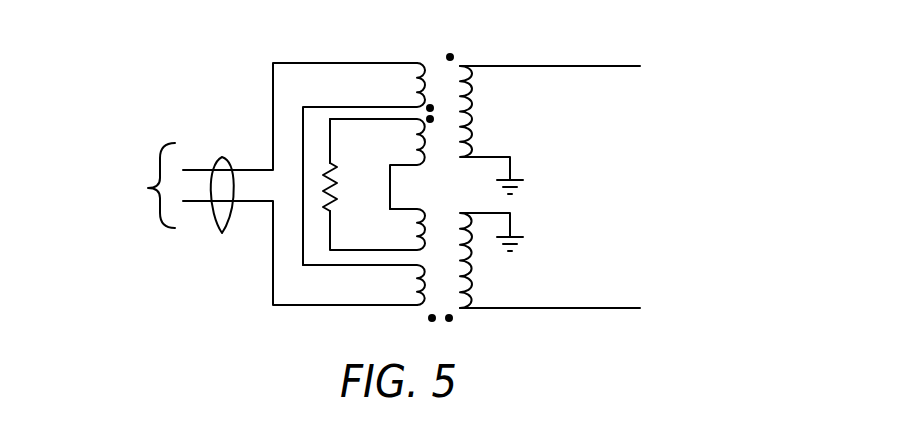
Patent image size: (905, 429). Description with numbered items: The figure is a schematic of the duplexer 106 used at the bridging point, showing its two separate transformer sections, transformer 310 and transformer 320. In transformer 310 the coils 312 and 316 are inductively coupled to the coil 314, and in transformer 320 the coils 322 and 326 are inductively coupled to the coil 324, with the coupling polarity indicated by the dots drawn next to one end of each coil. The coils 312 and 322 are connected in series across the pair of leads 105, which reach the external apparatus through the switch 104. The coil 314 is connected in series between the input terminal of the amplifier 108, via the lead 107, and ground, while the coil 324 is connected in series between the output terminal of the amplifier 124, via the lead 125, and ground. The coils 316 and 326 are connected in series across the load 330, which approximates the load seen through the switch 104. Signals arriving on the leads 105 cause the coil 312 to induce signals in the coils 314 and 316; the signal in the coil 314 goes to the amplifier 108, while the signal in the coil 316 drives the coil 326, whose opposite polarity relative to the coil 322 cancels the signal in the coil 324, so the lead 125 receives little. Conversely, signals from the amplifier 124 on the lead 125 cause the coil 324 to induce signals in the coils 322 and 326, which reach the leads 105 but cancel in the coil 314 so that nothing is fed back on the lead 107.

The switch 104 is at (121, 185).
The leads 105 is at (225, 209).
The duplexer 106 is at (472, 31).
The lead 107 is at (560, 310).
The amplifier 108 is at (698, 313).
The amplifier 124 is at (698, 66).
The lead 125 is at (535, 66).
The transformer section 310 is at (445, 325).
The coil 312 is at (410, 283).
The coil 314 is at (475, 274).
The coil 316 is at (410, 226).
The transformer section 320 is at (434, 54).
The coil 322 is at (410, 82).
The coil 324 is at (471, 106).
The coil 326 is at (410, 140).
The load 330 is at (339, 189).